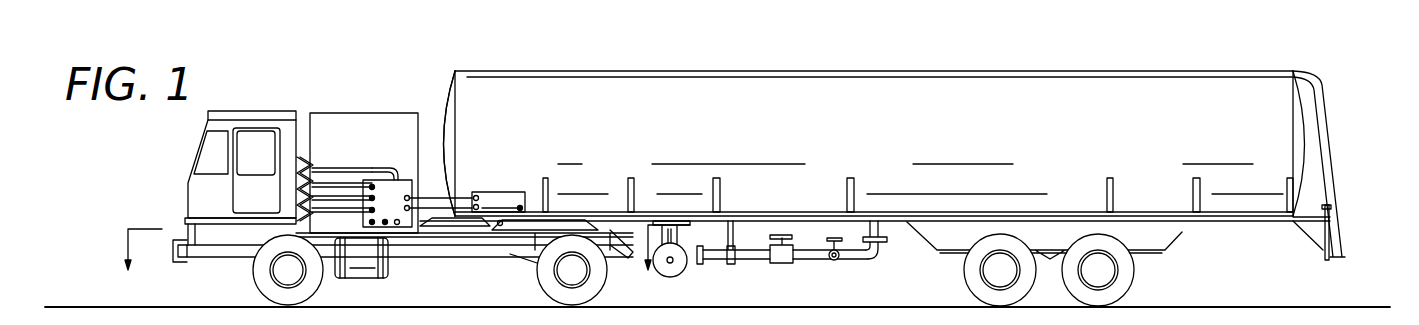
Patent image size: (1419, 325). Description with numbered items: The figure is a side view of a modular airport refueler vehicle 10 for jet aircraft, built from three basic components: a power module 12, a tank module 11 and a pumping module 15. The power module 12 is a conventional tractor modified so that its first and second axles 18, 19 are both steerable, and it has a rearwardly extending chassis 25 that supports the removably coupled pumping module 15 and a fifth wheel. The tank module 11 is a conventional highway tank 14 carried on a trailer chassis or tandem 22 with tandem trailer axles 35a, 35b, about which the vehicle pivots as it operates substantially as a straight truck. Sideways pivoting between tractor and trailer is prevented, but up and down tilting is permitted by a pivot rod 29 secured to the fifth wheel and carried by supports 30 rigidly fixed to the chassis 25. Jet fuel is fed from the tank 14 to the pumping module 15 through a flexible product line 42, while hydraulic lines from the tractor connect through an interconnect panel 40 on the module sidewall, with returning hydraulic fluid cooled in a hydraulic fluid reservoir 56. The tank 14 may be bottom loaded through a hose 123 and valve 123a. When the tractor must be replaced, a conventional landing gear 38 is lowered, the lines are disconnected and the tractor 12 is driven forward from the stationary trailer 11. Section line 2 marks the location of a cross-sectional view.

The modular airport refueler vehicle 10 is at (1015, 67).
The tank module 11 is at (473, 83).
The power module 12 is at (192, 190).
The highway tank 14 is at (1303, 138).
The pumping module 15 is at (338, 120).
The first axle 18 is at (272, 268).
The second axle 19 is at (563, 270).
The trailer chassis 22 is at (1160, 250).
The chassis 25 is at (633, 252).
The pivot rod 29 is at (499, 226).
The support 30 is at (503, 228).
The tandem trailer axle 35a is at (988, 268).
The tandem trailer axle 35b is at (1110, 275).
The landing gear 38 is at (680, 248).
The interconnect panel 40 is at (403, 178).
The product line 42 is at (440, 234).
The hydraulic fluid reservoir 56 is at (362, 279).
The hose 123 is at (745, 260).
The valve 123a is at (785, 265).
The section line 2- 2 is at (402, 263).